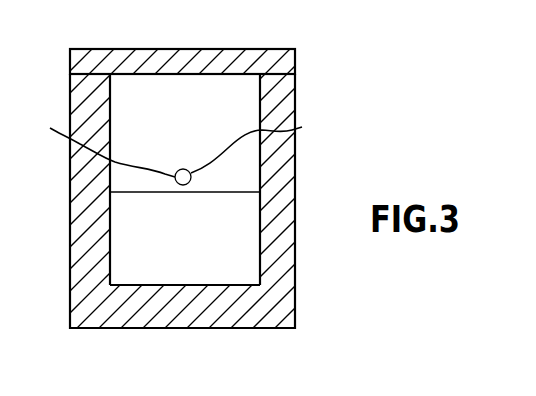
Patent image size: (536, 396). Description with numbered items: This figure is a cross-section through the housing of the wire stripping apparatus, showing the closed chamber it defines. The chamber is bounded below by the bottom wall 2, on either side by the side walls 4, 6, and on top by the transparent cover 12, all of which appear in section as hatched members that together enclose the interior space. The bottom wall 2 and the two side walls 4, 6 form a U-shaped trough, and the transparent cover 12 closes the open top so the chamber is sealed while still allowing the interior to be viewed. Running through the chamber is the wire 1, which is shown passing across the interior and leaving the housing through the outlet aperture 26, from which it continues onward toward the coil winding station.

The transparent cover 12 is at (268, 52).
The side wall 4 is at (92, 230).
The side wall 6 is at (285, 234).
The bottom wall 2 is at (172, 300).
The wire 1 is at (111, 148).
The outlet aperture 26 is at (302, 127).